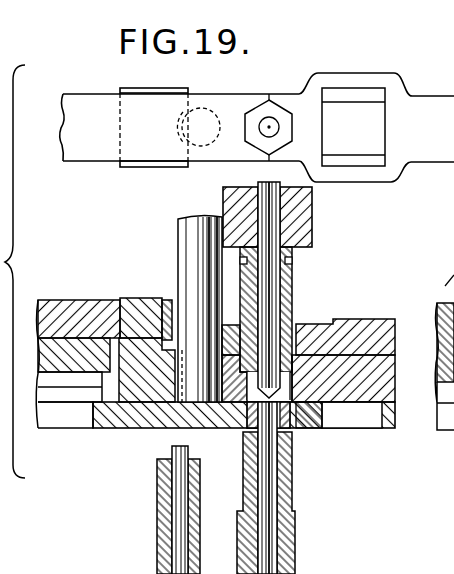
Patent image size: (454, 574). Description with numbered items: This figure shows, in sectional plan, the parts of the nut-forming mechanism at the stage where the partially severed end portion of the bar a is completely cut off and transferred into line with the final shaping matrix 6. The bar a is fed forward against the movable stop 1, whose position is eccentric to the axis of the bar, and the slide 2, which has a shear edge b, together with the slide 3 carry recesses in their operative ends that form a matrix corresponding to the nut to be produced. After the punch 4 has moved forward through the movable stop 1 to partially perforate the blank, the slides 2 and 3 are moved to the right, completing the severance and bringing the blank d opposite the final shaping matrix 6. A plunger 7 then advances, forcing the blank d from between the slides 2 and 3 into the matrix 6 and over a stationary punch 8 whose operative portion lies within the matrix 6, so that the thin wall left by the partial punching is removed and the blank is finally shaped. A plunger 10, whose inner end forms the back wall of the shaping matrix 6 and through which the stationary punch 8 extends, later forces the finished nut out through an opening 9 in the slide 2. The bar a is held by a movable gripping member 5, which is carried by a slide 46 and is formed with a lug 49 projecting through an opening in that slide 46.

The movable stop 1 is at (160, 512).
The slide 2 is at (431, 150).
The slide 3 is at (92, 152).
The punch 4 is at (182, 537).
The movable gripping member 5 is at (143, 167).
The final shaping matrix 6 is at (298, 428).
The plunger 7 is at (287, 501).
The stationary punch 8 is at (275, 278).
The opening 9 is at (362, 115).
The plunger 10 is at (297, 297).
The slide 46 is at (71, 304).
The lug 49 is at (144, 304).
The bar a is at (186, 243).
The shear edge b is at (275, 104).
The blank d is at (249, 427).